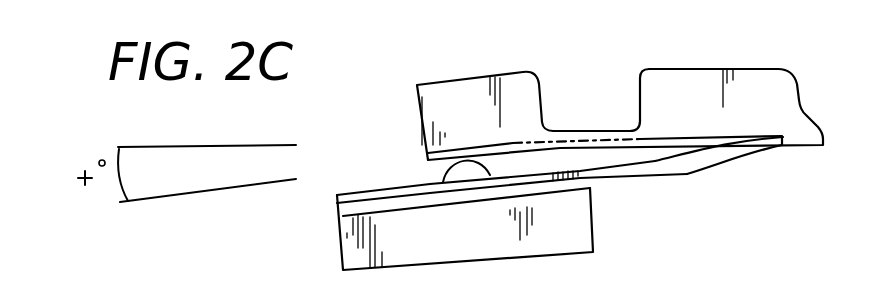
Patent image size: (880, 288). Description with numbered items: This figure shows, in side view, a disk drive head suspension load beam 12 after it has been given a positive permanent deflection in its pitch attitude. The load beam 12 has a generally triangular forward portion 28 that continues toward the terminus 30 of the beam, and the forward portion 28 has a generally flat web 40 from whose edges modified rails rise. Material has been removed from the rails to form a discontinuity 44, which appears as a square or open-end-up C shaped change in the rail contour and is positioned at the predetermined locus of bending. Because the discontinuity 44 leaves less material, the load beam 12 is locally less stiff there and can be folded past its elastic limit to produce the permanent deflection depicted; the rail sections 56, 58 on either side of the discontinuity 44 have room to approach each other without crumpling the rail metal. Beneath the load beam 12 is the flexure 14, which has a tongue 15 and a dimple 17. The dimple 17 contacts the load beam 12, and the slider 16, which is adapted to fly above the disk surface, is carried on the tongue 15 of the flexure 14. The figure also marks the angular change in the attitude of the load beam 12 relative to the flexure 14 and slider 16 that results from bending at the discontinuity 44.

The load beam 12 is at (777, 64).
The flexure 14 is at (667, 177).
The tongue 15 is at (347, 210).
The slider 16 is at (592, 230).
The dimple 17 is at (443, 180).
The forward portion 28 is at (783, 147).
The terminus 30 is at (437, 173).
The web 40 is at (824, 138).
The discontinuity 44 is at (604, 103).
The rail section 56 is at (527, 78).
The rail section 58 is at (664, 72).